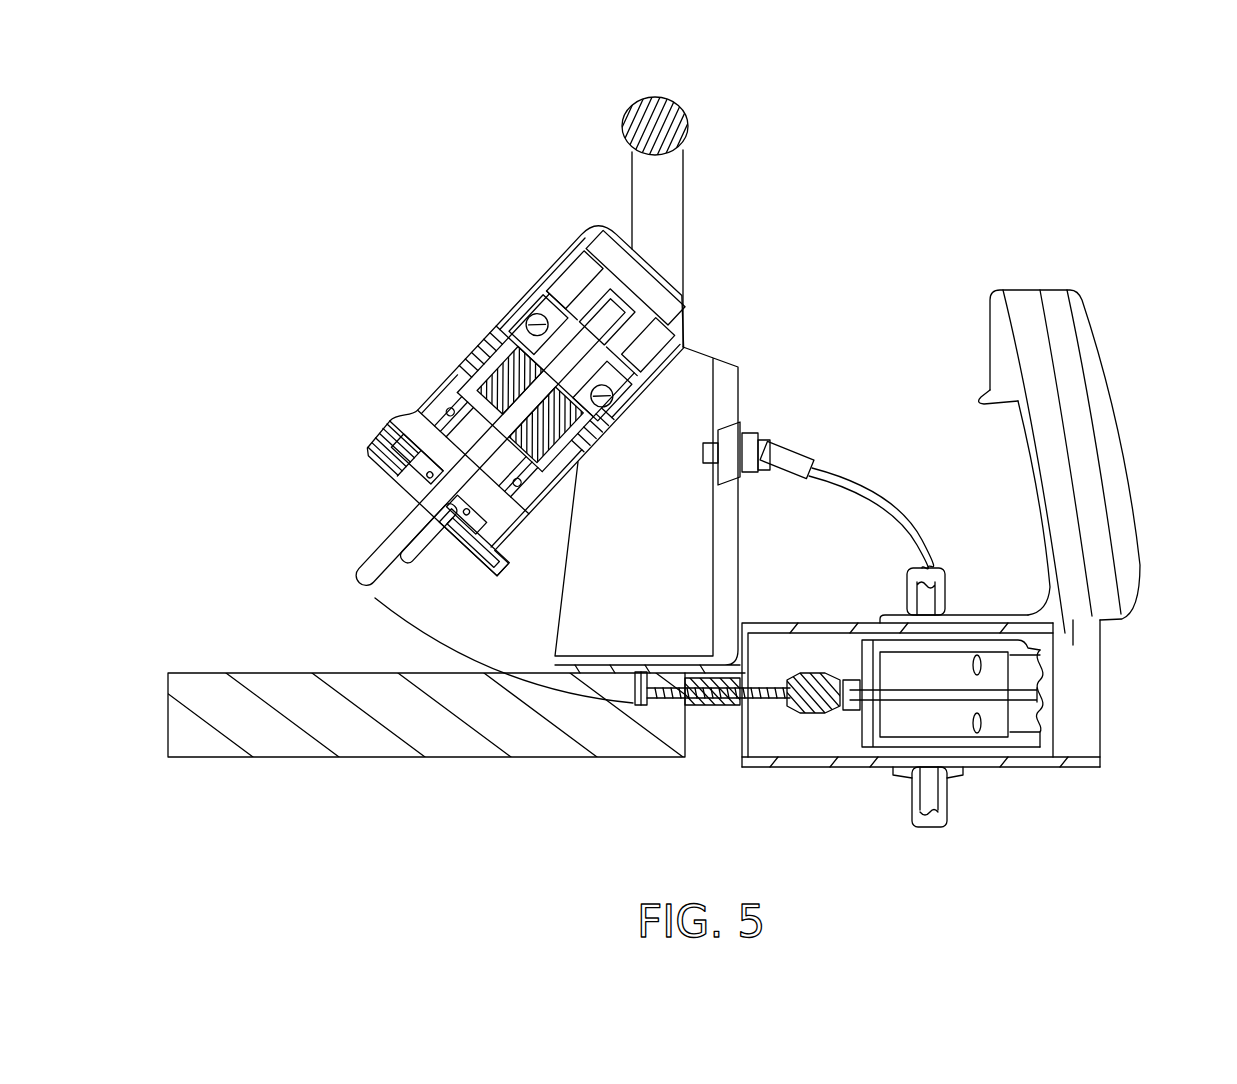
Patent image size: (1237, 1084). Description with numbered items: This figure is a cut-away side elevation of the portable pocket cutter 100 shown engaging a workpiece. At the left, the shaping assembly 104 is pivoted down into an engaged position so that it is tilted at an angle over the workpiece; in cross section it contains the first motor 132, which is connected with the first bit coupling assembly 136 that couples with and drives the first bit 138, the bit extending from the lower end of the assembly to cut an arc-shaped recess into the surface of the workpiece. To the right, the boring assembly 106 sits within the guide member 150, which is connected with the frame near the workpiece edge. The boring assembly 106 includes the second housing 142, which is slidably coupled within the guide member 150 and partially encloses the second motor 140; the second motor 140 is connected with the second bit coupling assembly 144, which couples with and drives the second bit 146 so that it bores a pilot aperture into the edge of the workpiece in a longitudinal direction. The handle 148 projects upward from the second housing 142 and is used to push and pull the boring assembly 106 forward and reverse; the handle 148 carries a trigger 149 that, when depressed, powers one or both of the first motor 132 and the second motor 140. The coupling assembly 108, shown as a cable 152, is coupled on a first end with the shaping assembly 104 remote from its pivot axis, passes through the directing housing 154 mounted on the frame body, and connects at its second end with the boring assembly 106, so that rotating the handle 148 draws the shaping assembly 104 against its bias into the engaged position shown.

The portable pocket cutter 100 is at (520, 140).
The shaping assembly 104 is at (487, 268).
The boring assembly 106 is at (985, 825).
The coupling assembly 108 is at (857, 462).
The first motor 132 is at (470, 346).
The first bit coupling assembly 136 is at (378, 490).
The first bit 138 is at (363, 563).
The second motor 140 is at (913, 723).
The second housing 142 is at (1045, 720).
The second bit coupling assembly 144 is at (817, 727).
The second bit 146 is at (668, 700).
The handle 148 is at (1027, 308).
The trigger 149 is at (990, 392).
The guide member 150 is at (1075, 665).
The cable 152 is at (878, 496).
The directing housing 154 is at (778, 445).